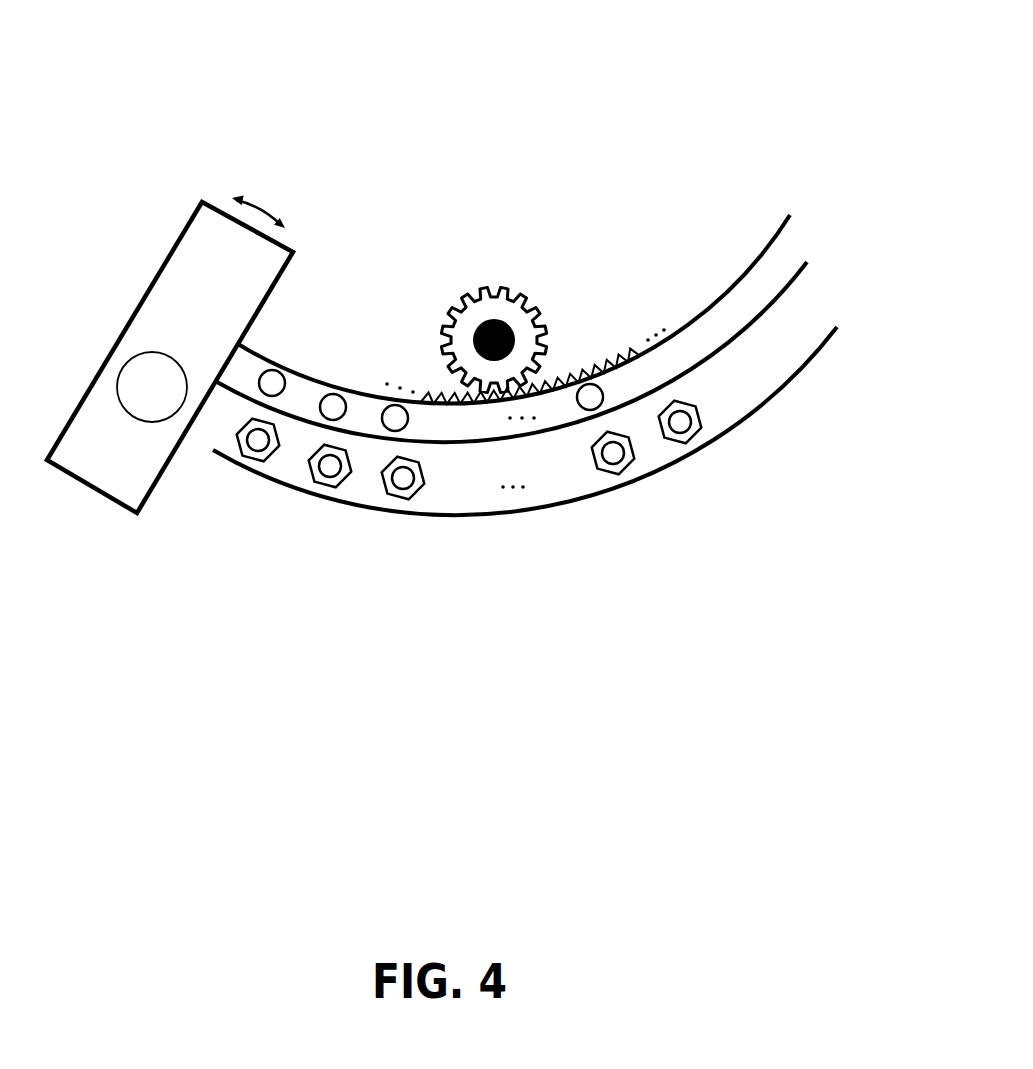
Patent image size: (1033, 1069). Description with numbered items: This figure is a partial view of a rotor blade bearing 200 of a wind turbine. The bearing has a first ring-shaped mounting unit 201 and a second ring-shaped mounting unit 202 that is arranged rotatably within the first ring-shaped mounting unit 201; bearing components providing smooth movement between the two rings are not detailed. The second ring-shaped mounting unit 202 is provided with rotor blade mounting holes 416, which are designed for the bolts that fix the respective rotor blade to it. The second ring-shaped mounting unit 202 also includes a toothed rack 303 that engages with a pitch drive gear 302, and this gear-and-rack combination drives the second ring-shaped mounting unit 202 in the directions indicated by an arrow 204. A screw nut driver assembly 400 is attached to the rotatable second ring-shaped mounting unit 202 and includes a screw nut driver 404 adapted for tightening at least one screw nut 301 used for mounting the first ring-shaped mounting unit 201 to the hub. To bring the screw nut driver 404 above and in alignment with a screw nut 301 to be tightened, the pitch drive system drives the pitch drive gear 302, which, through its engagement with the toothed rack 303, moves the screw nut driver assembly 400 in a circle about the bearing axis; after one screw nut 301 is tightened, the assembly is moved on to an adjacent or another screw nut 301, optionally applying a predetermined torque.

The rotor blade bearing 200 is at (704, 38).
The first ring-shaped mounting unit 201 is at (800, 345).
The second ring-shaped mounting unit 202 is at (752, 290).
The arrow 204 is at (243, 205).
The screw nut 301 is at (258, 440).
The pitch drive gear 302 is at (482, 310).
The toothed rack 303 is at (595, 367).
The screw nut driver assembly 400 is at (203, 238).
The screw nut driver 404 is at (140, 368).
The rotor blade mounting holes 416 is at (395, 418).